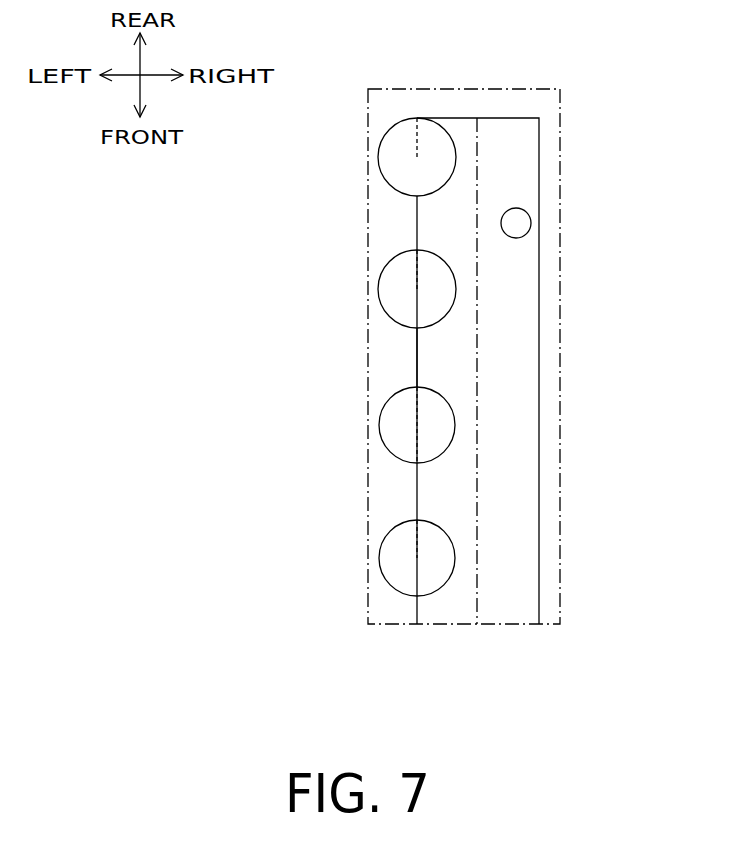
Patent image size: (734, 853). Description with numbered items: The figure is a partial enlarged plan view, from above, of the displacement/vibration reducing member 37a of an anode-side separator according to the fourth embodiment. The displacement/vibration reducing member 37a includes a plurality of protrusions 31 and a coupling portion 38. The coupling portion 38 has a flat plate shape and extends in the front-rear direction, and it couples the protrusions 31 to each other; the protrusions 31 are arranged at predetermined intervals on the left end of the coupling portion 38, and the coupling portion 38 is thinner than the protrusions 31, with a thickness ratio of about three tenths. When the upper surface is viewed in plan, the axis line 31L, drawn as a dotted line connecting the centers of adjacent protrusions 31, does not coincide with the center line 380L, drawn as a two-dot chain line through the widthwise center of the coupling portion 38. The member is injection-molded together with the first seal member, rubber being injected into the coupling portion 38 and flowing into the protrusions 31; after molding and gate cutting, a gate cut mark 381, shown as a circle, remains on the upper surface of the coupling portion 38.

The displacement/vibration reducing member 37a is at (292, 227).
The protrusions 31 is at (395, 287).
The coupling portion 38 is at (463, 364).
The axis line 31L is at (417, 430).
The gate cut mark 381 is at (516, 208).
The center line 380L is at (478, 490).